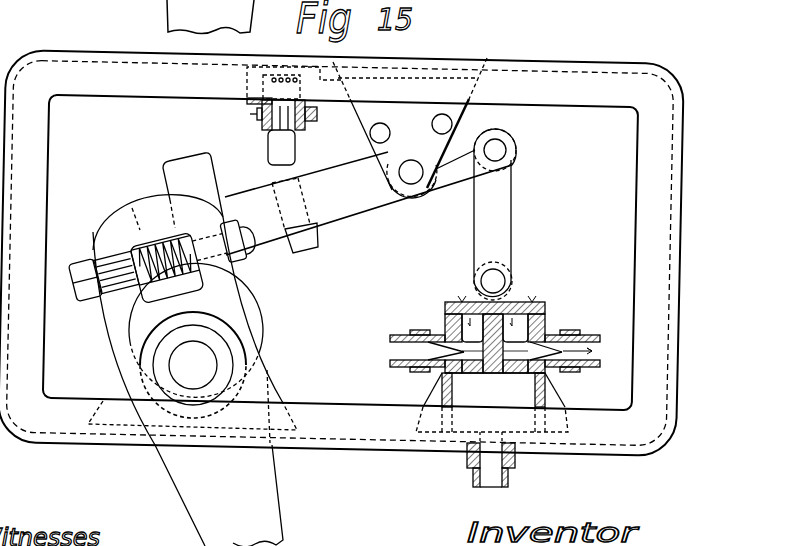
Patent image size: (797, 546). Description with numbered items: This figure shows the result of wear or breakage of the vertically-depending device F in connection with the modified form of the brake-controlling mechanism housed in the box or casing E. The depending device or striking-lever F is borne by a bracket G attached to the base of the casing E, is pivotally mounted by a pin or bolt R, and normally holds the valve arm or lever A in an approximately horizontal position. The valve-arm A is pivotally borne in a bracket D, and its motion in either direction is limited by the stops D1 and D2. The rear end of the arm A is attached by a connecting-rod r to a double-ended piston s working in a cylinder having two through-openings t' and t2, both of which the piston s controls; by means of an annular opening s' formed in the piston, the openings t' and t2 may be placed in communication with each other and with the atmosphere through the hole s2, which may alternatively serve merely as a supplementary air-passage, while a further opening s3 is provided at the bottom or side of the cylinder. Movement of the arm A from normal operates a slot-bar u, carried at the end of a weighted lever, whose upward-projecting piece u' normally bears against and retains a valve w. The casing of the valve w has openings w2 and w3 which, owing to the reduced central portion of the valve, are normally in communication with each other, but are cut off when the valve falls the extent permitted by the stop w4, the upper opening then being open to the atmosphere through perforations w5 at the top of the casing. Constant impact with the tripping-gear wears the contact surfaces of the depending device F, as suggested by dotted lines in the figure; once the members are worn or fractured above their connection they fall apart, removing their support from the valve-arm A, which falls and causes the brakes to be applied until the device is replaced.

The valve arm or lever A is at (370, 192).
The bracket D is at (410, 124).
The stop D1 is at (450, 125).
The stop D2 is at (371, 133).
The box or casing E is at (335, 324).
The depending device or striking-lever F is at (223, 349).
The bracket G is at (117, 378).
The pin or bolt R is at (196, 340).
The connecting-rod r is at (493, 225).
The double-ended piston s is at (492, 367).
The annular opening s' is at (422, 359).
The hole s2 is at (450, 302).
The opening s3 is at (493, 462).
The through-opening t' is at (393, 316).
The through-opening t2 is at (557, 335).
The slot-bar u is at (307, 215).
The upward-projecting piece u' is at (170, 239).
The valve w is at (276, 131).
The opening w2 is at (250, 98).
The opening w3 is at (315, 110).
The stop w4 is at (257, 114).
The perforations w5 is at (285, 77).